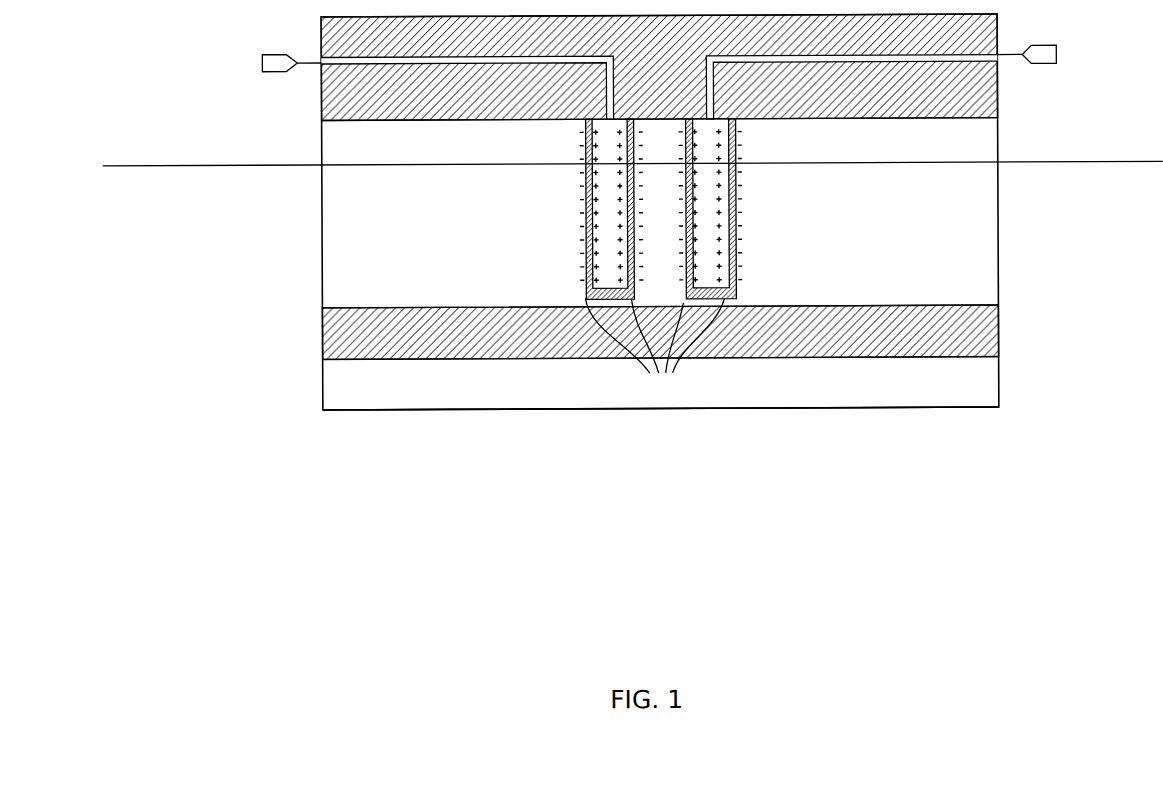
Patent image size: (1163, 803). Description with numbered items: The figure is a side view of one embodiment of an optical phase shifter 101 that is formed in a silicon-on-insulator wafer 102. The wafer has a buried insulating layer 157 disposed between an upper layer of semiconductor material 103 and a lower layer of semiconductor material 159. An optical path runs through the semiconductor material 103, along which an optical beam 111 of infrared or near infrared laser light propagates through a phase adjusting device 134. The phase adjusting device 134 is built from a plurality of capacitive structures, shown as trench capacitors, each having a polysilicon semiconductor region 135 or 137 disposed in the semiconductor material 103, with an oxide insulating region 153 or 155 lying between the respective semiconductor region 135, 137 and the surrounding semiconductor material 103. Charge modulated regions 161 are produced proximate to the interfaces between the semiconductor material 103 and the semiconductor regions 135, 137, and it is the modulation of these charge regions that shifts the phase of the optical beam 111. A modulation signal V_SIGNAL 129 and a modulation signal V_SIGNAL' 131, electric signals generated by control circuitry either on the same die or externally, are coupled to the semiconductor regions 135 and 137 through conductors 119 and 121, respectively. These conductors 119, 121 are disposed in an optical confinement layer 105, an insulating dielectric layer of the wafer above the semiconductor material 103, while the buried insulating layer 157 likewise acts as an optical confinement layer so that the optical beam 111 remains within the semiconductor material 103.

The optical phase shifter 101 is at (1038, 436).
The silicon-on-insulator (SOI) wafer 102 is at (932, 410).
The layer of semiconductor material 103 is at (988, 271).
The optical confinement layer 105 is at (1000, 71).
The optical beam 111 is at (237, 170).
The conductor 119 is at (598, 104).
The conductor 121 is at (722, 97).
The modulation signal V_SIGNAL 129 is at (228, 81).
The modulation signal V_SIGNAL' 131 is at (1092, 77).
The phase adjusting device 134 is at (709, 208).
The semiconductor region 135 is at (629, 188).
The semiconductor region 137 is at (731, 188).
The insulating region 153 is at (632, 230).
The insulating region 155 is at (730, 230).
The buried insulating layer 157 is at (988, 326).
The layer of semiconductor material 159 is at (988, 377).
The modulated charge regions 161 is at (654, 347).